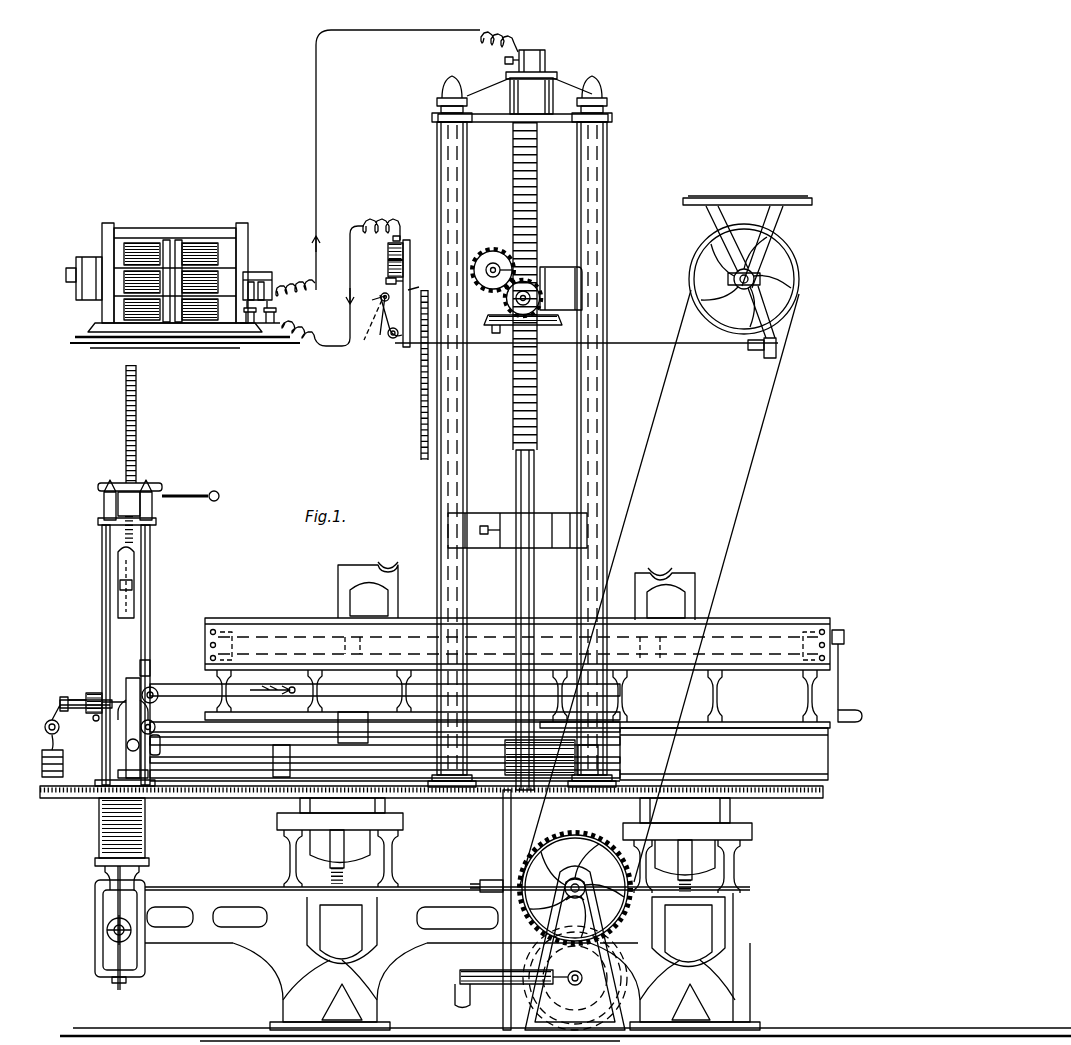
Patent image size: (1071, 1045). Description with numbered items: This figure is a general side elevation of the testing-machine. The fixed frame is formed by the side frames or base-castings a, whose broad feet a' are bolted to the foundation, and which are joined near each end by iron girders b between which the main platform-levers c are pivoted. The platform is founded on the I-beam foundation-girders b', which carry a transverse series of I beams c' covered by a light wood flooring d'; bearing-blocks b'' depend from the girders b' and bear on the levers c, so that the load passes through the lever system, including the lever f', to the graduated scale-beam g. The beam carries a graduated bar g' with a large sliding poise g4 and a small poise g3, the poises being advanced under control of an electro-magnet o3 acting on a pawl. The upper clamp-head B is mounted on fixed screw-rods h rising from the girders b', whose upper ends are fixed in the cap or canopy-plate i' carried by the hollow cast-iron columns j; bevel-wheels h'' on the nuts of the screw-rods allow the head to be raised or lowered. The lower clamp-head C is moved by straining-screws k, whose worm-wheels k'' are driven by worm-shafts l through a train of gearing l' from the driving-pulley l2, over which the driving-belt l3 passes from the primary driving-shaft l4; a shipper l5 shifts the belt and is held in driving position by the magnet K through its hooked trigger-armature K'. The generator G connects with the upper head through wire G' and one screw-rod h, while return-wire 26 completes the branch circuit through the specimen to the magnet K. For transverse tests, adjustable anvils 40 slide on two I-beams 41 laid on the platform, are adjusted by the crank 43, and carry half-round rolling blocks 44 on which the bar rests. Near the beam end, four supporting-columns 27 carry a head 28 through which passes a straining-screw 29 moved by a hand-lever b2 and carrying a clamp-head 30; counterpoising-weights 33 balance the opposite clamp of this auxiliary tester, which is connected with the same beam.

The electric source or generator G is at (183, 277).
The wire G' is at (397, 163).
The return-wire 26 is at (341, 288).
The magnet K is at (383, 291).
The hooked trigger-armature K' is at (375, 365).
The hollow cast-iron columns j is at (522, 431).
The cross-head i' is at (523, 86).
The fixed screw-rods h is at (530, 456).
The upper clamp-head B is at (548, 272).
The bevel-wheels h'' is at (586, 329).
The lower clamp-head C is at (517, 516).
The driving-pulley l2 is at (790, 250).
The primary driving-shaft l4 is at (756, 280).
The shipper l5 is at (778, 350).
The driving-belt l3 is at (730, 545).
The I-beams 41 is at (517, 644).
The crank 43 is at (847, 686).
The adjustable blocks or anvils 40 is at (516, 592).
The tilting or rolling blocks 44 is at (388, 568).
The I beams c' is at (509, 699).
The light flooring d' is at (385, 682).
The graduated scale-beam g is at (385, 751).
The graduated bar g' is at (353, 727).
The small sliding poise g3 is at (312, 733).
The large sliding poise g4 is at (549, 757).
The foundation-girders b' is at (724, 754).
The bearing-blocks b'' is at (431, 804).
The iron girders b is at (508, 853).
The main platform-levers c is at (512, 861).
The side frames or base-castings a is at (452, 958).
The broad feet a' is at (565, 1023).
The lever f' is at (108, 894).
The worm-shafts l is at (540, 921).
The train of gearing l' is at (575, 873).
The straining-screws k is at (490, 910).
The worm-wheels k'' is at (496, 987).
The straining-screw 29 is at (142, 424).
The handle b2 is at (210, 494).
The head 28 is at (150, 515).
The clamp-head 30 is at (138, 600).
The supporting-columns 27 is at (125, 655).
The electro-magnet o3 is at (150, 668).
The counterpoising-weights 33 is at (84, 735).